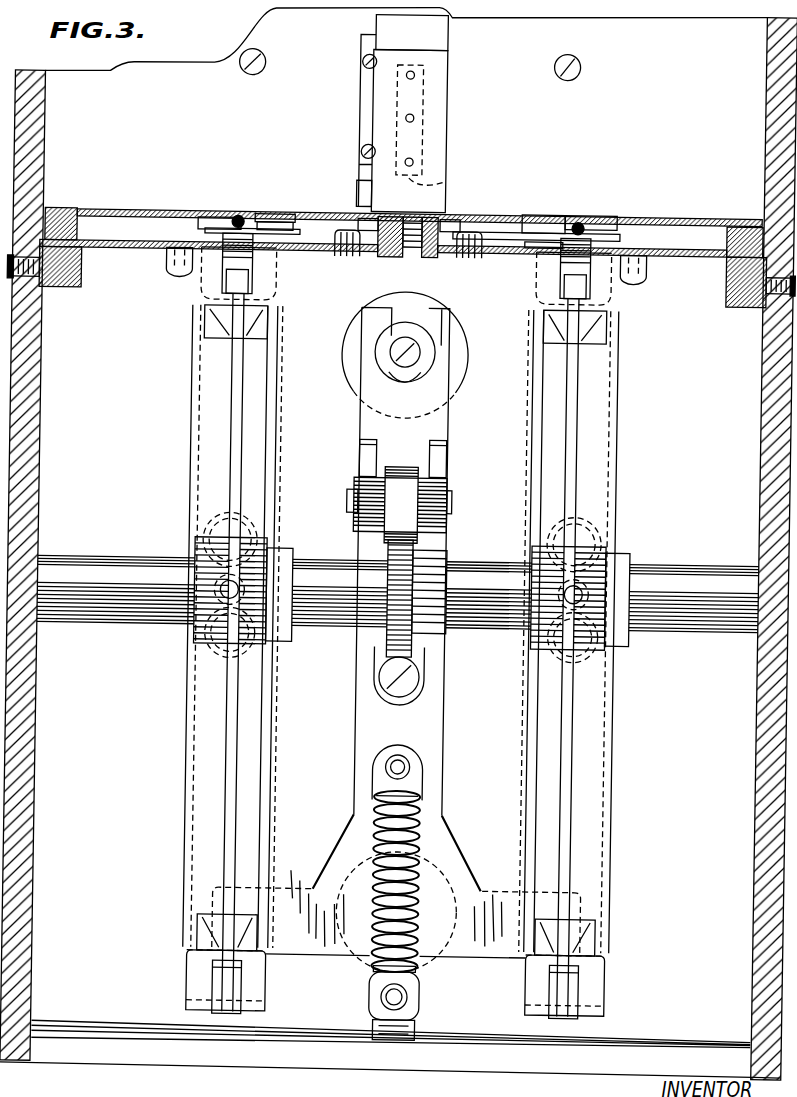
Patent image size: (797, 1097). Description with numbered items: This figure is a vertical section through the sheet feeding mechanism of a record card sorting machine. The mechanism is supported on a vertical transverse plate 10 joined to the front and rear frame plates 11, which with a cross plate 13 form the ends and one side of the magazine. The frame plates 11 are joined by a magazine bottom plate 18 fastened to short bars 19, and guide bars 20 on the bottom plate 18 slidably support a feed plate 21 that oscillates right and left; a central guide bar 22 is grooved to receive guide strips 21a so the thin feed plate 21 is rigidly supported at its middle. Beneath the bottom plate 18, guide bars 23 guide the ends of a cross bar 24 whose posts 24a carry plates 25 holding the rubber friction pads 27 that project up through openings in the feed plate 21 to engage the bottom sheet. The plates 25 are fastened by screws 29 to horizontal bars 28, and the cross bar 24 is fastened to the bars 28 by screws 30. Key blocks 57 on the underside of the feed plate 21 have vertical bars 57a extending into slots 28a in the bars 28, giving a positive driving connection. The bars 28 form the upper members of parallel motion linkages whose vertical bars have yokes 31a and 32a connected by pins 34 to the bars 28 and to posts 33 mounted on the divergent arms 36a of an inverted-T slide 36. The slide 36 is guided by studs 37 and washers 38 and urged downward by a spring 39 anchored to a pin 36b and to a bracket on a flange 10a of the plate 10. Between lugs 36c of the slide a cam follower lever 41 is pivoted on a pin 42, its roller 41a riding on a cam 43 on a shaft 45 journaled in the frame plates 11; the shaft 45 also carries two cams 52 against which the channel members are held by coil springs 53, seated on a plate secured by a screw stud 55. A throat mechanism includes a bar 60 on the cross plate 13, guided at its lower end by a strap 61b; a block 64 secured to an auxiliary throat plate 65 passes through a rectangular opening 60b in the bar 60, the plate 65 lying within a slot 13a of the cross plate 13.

The vertical transverse plate 10 is at (98, 1020).
The flange 10a is at (481, 1052).
The frame plates 11 is at (30, 908).
The cross plate 13 is at (406, 42).
The slot 13a is at (347, 169).
The magazine bottom plate 18 is at (113, 255).
The short bars 19 is at (69, 292).
The guide bars 20 is at (78, 214).
The feed plate 21 is at (125, 216).
The guide strips 21a is at (359, 222).
The guide bar 22 is at (431, 258).
The guide bars 23 is at (162, 274).
The cross bar 24 is at (326, 256).
The posts 24a is at (347, 240).
The plates 25 is at (262, 219).
The friction pad 27 is at (207, 211).
The horizontal bars 28 is at (212, 343).
The slots 28a is at (218, 236).
The screws 29 is at (235, 219).
The screws 30 is at (211, 288).
The yokes 31a is at (245, 338).
The yokes 32a is at (202, 337).
The posts 33 is at (240, 1008).
The pins 34 is at (259, 290).
The slide 36 is at (375, 720).
The divergent arms 36a is at (292, 902).
The pin 36b is at (386, 766).
The lugs 36c is at (367, 459).
The studs 37 is at (407, 358).
The washers 38 is at (428, 356).
The spring 39 is at (380, 818).
The cam follower lever 41 is at (432, 501).
The roller 41a is at (402, 498).
The pin 42 is at (350, 494).
The cam 43 is at (401, 583).
The shaft 45 is at (90, 605).
The cams 52 is at (210, 573).
The coil springs 53 is at (246, 522).
The screw stud 55 is at (183, 624).
The key blocks 57 is at (265, 215).
The vertical bars 57a is at (537, 246).
The bar 60 is at (423, 37).
The rectangular opening 60b is at (418, 108).
The strap 61b is at (361, 192).
The block 64 is at (441, 177).
The auxiliary throat plate 65 is at (430, 136).